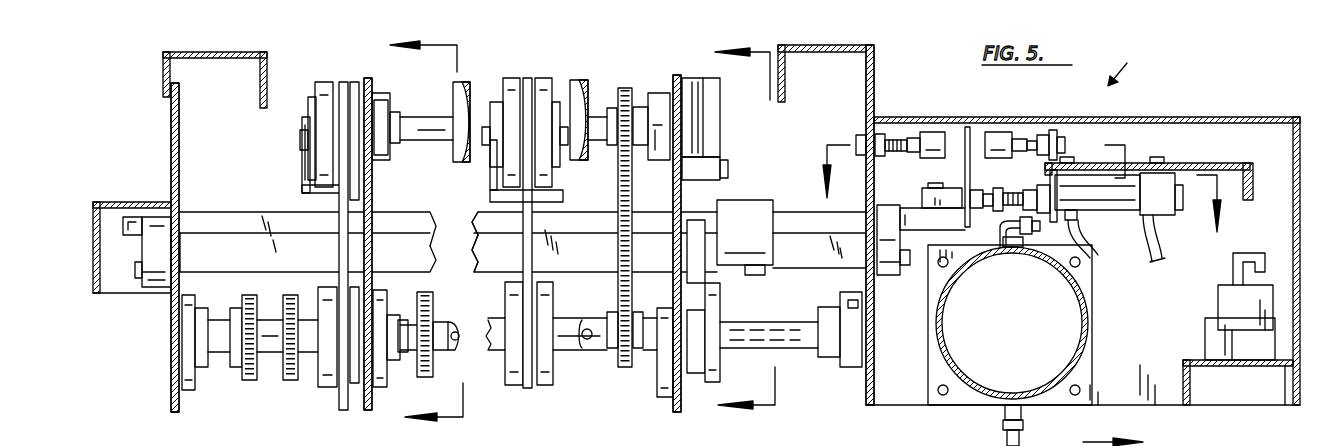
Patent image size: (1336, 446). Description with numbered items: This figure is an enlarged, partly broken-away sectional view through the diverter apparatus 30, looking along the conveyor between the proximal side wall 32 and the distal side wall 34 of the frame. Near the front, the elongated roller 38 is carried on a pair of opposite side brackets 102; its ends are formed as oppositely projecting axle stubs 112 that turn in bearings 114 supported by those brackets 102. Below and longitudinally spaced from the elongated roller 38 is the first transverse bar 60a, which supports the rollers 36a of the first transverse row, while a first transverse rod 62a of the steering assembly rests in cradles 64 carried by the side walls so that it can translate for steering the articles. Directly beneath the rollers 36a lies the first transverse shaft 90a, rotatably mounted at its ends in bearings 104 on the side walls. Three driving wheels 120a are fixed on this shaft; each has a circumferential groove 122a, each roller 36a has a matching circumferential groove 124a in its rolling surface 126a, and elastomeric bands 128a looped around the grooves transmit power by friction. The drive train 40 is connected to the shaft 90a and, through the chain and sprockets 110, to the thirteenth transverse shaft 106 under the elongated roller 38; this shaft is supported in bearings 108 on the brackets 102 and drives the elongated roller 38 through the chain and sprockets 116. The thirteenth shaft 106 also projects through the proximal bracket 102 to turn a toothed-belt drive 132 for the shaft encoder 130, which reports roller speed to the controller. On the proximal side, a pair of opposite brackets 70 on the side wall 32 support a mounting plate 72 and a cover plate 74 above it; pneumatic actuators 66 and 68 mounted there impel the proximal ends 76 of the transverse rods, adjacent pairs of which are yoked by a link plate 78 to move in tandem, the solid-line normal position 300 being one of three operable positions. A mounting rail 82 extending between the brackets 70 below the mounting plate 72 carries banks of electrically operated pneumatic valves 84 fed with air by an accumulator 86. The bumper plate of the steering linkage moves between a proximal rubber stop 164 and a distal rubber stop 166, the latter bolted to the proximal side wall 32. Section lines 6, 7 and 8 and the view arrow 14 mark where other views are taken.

The diverter apparatus 30 is at (1124, 64).
The proximal side wall 32 is at (865, 85).
The distal side wall 34 is at (181, 128).
The rollers of the first transverse row 36a is at (326, 85).
The elongated roller 38 is at (465, 88).
The drive train 40 is at (291, 380).
The first transverse bar 60a is at (203, 252).
The first transverse rod 62a is at (260, 228).
The cradle 64 is at (157, 281).
The pneumatic actuator 66 is at (1113, 223).
The pneumatic actuator 68 is at (1160, 180).
The opposite brackets 70 is at (1263, 137).
The mounting plate 72 is at (1215, 165).
The cover plate 74 is at (1178, 117).
The proximal end 76 is at (955, 229).
The link plate 78 is at (920, 196).
The mounting rail 82 is at (1188, 360).
The electrically operated pneumatic valves 84 is at (1225, 297).
The accumulator 86 is at (1060, 322).
The first transverse shaft 90a is at (218, 328).
The side brackets 102 is at (368, 406).
The bearings 104 is at (215, 378).
The thirteenth transverse shaft 106 is at (438, 353).
The bearings 108 is at (392, 361).
The chain and sprockets 110 is at (432, 303).
The axle stubs 112 is at (423, 130).
The bearings 114 is at (390, 148).
The chain and sprockets 116 is at (618, 283).
The driving wheels 120a is at (325, 388).
The circumferential groove 122a is at (537, 386).
The circumferential groove 124a is at (520, 78).
The rolling surface 126a is at (548, 80).
The elastomeric bands 128a is at (523, 243).
The shaft encoder 130 is at (743, 212).
The toothed-belt drive 132 is at (750, 275).
The proximal rubber stop 164 is at (1005, 133).
The distal rubber stop 166 is at (933, 133).
The normal position 300 is at (968, 128).
The section line for FIG. 6 is at (420, 234).
The section line for FIG. 7 is at (737, 232).
The section line for FIG. 8 is at (1014, 190).
The view arrow for FIG. 14 is at (1124, 439).